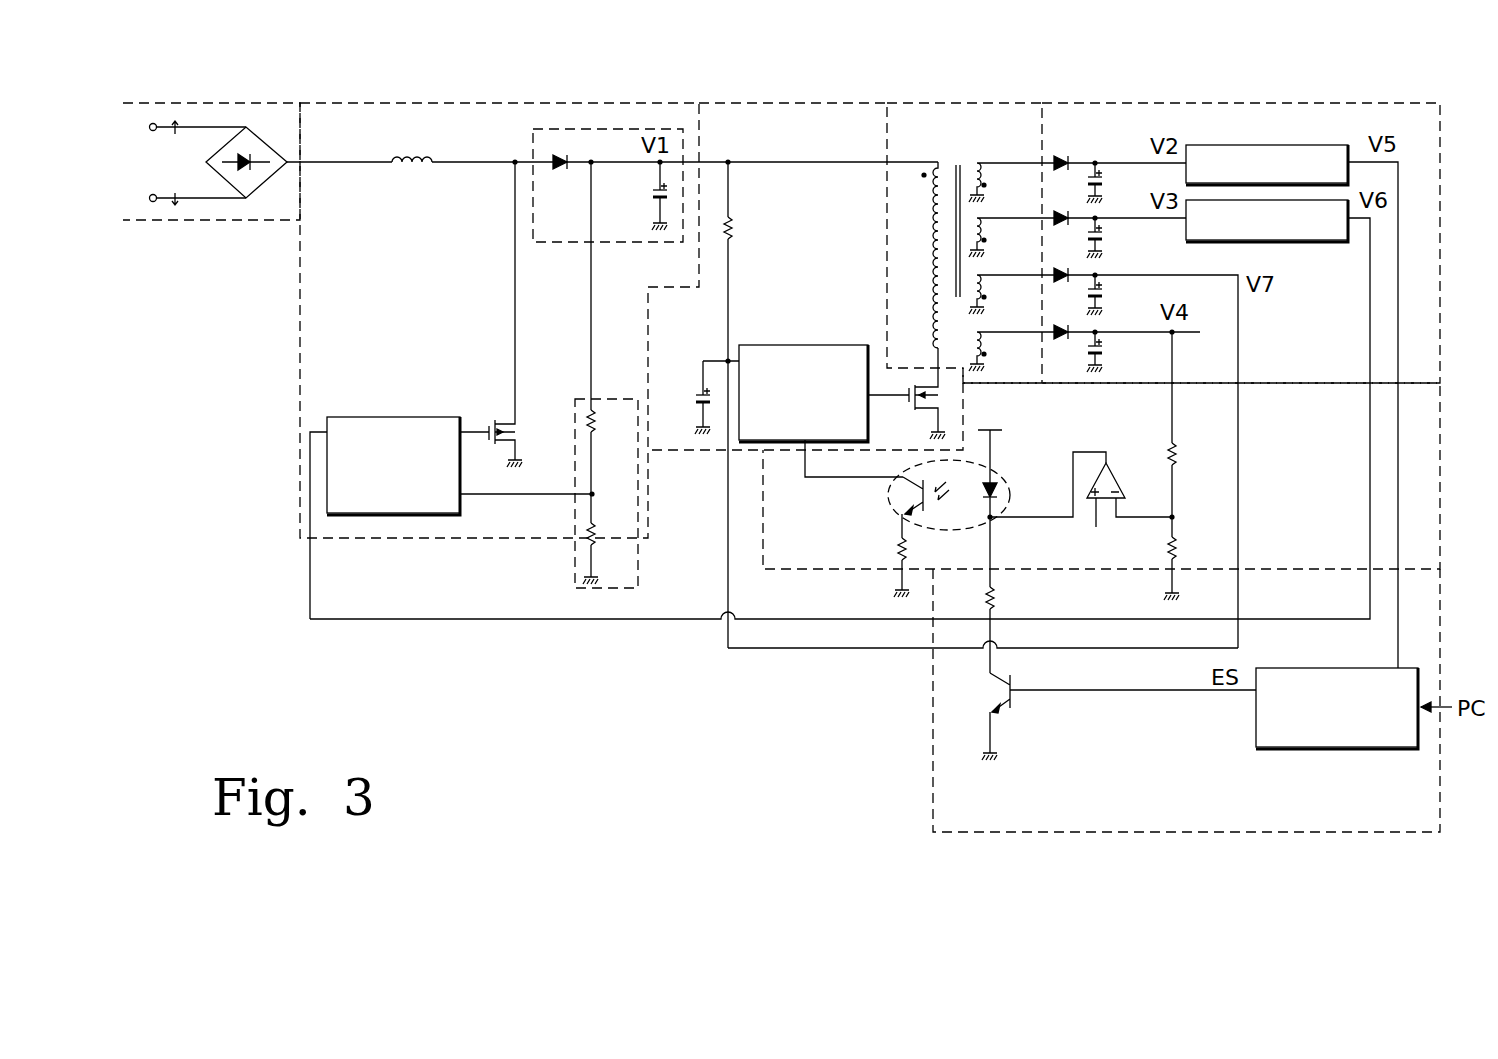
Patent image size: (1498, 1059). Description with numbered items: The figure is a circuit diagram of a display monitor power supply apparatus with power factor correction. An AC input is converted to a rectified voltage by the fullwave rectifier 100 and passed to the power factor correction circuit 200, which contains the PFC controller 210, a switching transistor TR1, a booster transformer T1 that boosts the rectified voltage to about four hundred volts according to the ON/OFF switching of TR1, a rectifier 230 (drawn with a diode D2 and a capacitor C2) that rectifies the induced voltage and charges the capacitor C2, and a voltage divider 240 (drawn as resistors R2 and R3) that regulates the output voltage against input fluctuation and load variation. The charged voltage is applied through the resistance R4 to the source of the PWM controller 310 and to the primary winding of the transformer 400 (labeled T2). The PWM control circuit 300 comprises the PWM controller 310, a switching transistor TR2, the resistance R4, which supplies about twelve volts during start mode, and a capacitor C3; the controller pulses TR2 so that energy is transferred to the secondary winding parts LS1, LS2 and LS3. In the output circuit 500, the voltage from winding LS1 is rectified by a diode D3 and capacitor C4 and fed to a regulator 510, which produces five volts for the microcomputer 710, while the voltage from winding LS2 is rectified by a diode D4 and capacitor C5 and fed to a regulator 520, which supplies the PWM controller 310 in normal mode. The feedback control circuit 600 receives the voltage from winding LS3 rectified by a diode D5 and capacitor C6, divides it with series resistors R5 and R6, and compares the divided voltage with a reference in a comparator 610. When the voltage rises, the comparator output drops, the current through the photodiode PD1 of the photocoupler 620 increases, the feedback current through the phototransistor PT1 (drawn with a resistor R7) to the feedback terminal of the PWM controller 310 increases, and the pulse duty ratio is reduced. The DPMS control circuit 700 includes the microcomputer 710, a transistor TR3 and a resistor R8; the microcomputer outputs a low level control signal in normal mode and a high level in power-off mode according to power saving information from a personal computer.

The fullwave rectifier 100 is at (233, 103).
The power factor correction circuit 200 is at (477, 103).
The PFC controller 210 is at (423, 417).
The rectifier 230 is at (552, 243).
The voltage divider 240 is at (575, 543).
The PWM control circuit 300 is at (742, 103).
The PWM controller 310 is at (832, 345).
The transformer 400 is at (955, 103).
The output circuit 500 is at (1190, 103).
The regulator 510 is at (1247, 144).
The regulator 520 is at (1325, 241).
The feedback control circuit 600 is at (1440, 520).
The comparator 610 is at (1115, 480).
The photocoupler 620 is at (949, 471).
The DPMS control circuit 700 is at (933, 793).
The microcomputer 710 is at (1275, 749).
The booster transformer T1 is at (412, 144).
The transformer T2 is at (937, 239).
The switching transistor TR1 is at (513, 314).
The switching transistor TR2 is at (906, 393).
The transistor TR3 is at (1099, 716).
The diode D2 is at (551, 178).
The diode D3 is at (1061, 151).
The diode D4 is at (1061, 206).
The diode D5 is at (1061, 263).
The capacitor C2 is at (640, 196).
The capacitor C3 is at (700, 396).
The capacitor C4 is at (1110, 183).
The capacitor C5 is at (1110, 238).
The capacitor C6 is at (1110, 323).
The resistor R2 is at (609, 342).
The resistor R3 is at (607, 553).
The resistance R4 is at (746, 405).
The resistor R5 is at (1190, 434).
The resistor R6 is at (1188, 567).
The resistor R7 is at (917, 566).
The resistor R8 is at (1008, 595).
The winding part LS1 is at (1011, 182).
The winding part LS2 is at (1011, 237).
The winding part LS3 is at (1011, 323).
The phototransistor PT1 is at (892, 507).
The photodiode PD1 is at (1028, 447).